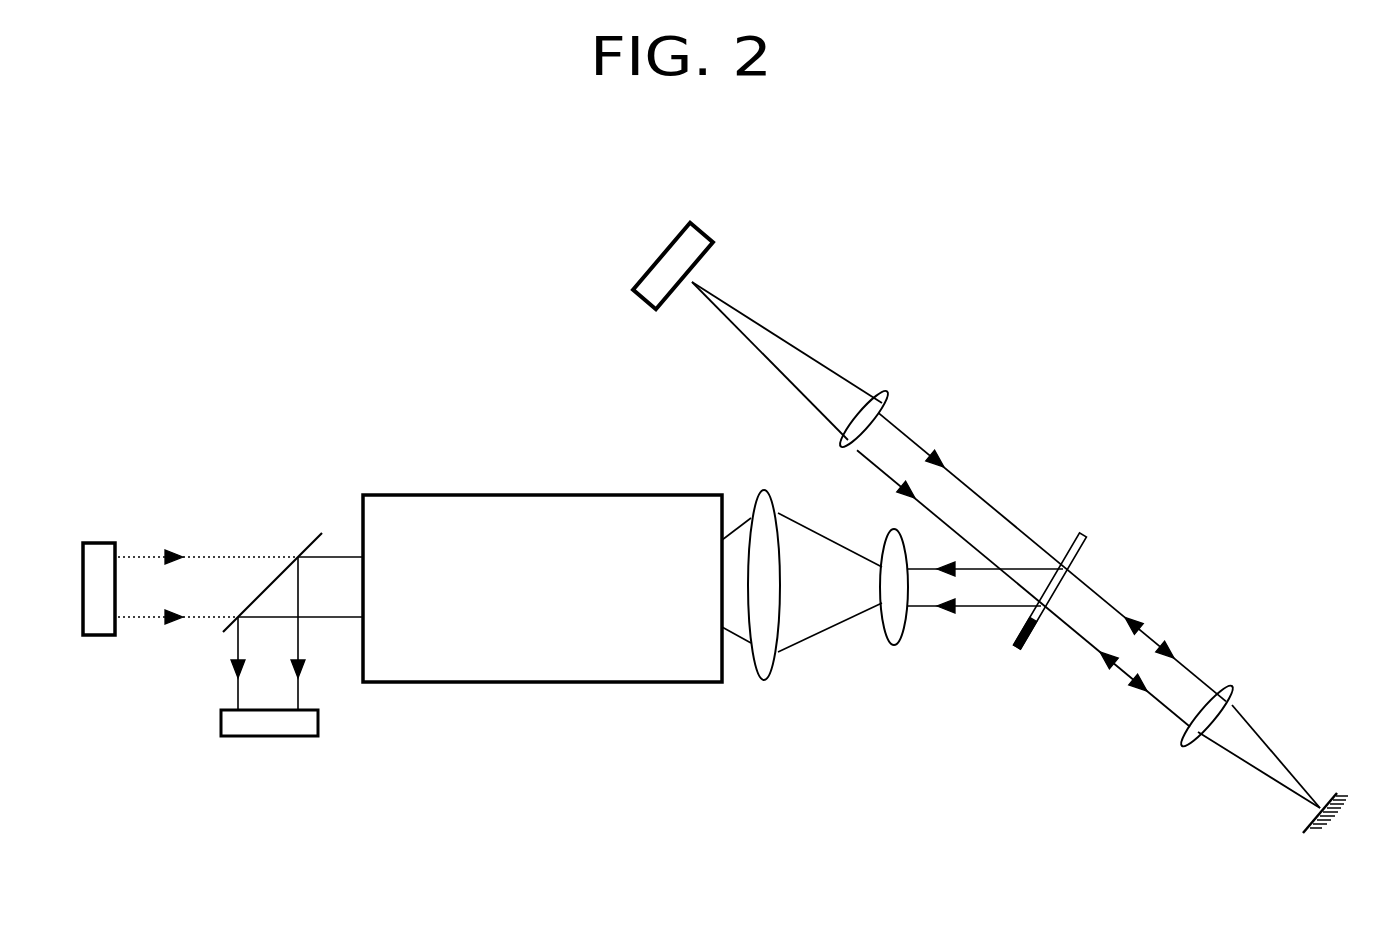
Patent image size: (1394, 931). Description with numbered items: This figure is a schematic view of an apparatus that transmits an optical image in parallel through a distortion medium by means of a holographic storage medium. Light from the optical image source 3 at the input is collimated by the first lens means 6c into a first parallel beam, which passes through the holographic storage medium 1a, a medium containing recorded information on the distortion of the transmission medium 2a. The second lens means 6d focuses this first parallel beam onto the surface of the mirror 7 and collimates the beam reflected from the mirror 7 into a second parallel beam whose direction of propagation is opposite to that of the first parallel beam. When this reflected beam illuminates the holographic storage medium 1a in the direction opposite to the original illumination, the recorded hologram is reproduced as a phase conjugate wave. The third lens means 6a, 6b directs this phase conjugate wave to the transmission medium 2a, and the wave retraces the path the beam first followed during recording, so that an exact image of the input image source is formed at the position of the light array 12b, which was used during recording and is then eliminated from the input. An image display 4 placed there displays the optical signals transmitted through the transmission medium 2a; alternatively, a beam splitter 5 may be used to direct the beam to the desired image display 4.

The light array 12b is at (103, 535).
The beam splitter 5 is at (327, 528).
The image display 4 is at (272, 740).
The transmission medium 2a is at (515, 687).
The third lens means 6a is at (762, 687).
The third lens means 6b is at (888, 655).
The optical image source 3 is at (617, 292).
The first lens means 6c is at (883, 390).
The holographic storage medium 1a is at (1092, 542).
The second lens means 6d is at (1230, 680).
The mirror 7 is at (1332, 782).